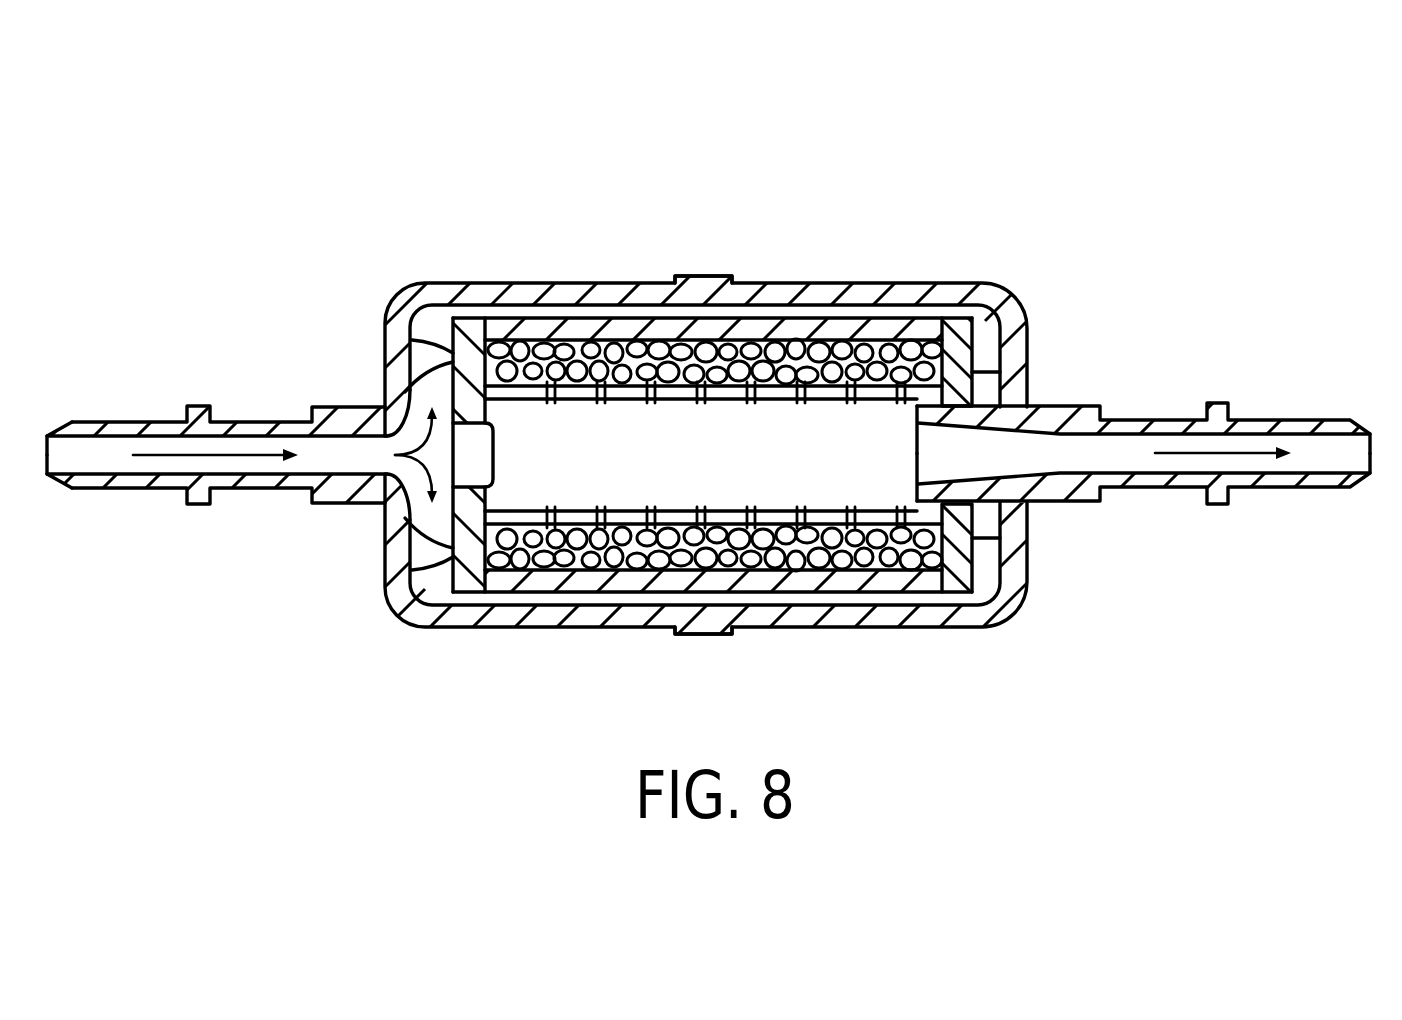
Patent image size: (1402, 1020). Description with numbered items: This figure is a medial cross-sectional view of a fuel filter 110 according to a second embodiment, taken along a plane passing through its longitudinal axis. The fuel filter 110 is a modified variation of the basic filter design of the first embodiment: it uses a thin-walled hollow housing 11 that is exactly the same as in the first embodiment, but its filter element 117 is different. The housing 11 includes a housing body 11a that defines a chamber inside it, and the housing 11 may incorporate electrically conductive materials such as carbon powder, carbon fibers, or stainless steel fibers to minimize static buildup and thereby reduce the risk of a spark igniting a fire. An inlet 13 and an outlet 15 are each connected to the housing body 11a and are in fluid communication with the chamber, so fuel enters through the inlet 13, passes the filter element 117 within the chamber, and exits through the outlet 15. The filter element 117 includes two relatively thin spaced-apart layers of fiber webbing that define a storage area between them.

The fuel filter 110 is at (956, 170).
The housing 11 is at (790, 275).
The housing body 11a is at (648, 281).
The inlet 13 is at (95, 421).
The outlet 15 is at (1312, 418).
The filter element 117 is at (622, 583).